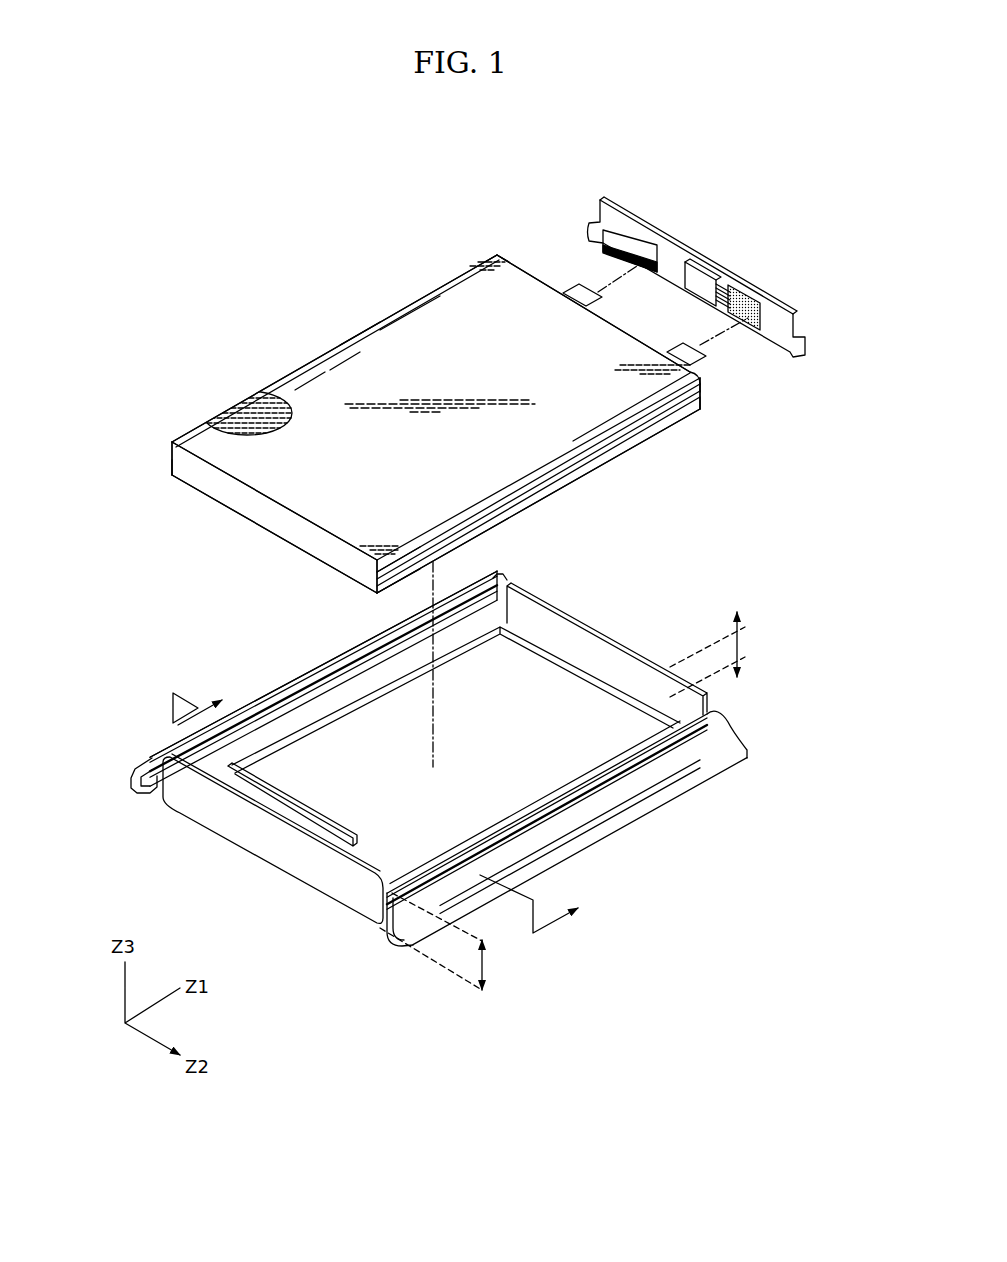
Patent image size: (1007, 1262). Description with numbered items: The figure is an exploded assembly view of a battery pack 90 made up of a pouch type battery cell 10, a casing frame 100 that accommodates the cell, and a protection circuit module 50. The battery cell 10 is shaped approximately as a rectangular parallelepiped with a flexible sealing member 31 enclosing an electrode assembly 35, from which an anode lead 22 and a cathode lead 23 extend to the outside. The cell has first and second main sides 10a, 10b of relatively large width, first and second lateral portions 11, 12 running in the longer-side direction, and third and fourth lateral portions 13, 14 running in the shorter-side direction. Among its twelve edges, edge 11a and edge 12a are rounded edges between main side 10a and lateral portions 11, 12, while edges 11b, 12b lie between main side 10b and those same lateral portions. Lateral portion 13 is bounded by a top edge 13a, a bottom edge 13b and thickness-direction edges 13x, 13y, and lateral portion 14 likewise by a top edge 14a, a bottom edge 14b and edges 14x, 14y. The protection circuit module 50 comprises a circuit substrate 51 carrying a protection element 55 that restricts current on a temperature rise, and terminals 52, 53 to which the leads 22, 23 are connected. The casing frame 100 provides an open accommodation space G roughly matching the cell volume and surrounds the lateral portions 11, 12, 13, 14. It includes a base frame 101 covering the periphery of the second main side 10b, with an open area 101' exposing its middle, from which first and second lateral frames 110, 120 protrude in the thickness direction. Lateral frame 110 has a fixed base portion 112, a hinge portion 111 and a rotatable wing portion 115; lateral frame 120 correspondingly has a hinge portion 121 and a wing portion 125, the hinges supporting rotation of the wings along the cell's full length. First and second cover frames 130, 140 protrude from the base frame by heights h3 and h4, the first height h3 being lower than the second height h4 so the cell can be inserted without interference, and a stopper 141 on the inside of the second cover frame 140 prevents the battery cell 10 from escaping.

The battery pack 90 is at (260, 252).
The battery cell 10 is at (196, 522).
The first main side 10a is at (343, 360).
The second main side 10b is at (360, 332).
The first lateral portion 11 is at (410, 305).
The edge 11a is at (455, 272).
The edge 11b is at (168, 480).
The second lateral portion 12 is at (674, 406).
The edge 12a is at (387, 548).
The edge 12b is at (392, 580).
The third lateral portion 13 is at (714, 380).
The top edge 13a is at (528, 283).
The bottom edge 13b is at (702, 410).
The edge 13x is at (497, 250).
The edge 13y is at (702, 393).
The fourth lateral portion 14 is at (255, 524).
The top edge 14a is at (215, 462).
The bottom edge 14b is at (193, 492).
The edge 14x is at (170, 455).
The edge 14y is at (365, 574).
The anode lead 22 is at (574, 293).
The cathode lead 23 is at (668, 350).
The sealing member 31 is at (310, 385).
The electrode assembly 35 is at (248, 406).
The protection circuit module 50 is at (686, 246).
The circuit substrate 51 is at (778, 300).
The terminal 52 is at (633, 235).
The terminal 53 is at (740, 283).
The protection element 55 is at (694, 262).
The casing frame 100 is at (453, 761).
The base frame 101 is at (593, 643).
The open area 101' is at (551, 641).
The first lateral frame 110 is at (313, 660).
The hinge portion 111 is at (500, 577).
The base portion 112 is at (400, 665).
The wing portion 115 is at (337, 652).
The second lateral frame 120 is at (590, 820).
The hinge portion 121 is at (730, 716).
The wing portion 125 is at (690, 782).
The first cover frame 130 is at (643, 645).
The second cover frame 140 is at (290, 868).
The stopper 141 is at (304, 814).
The accommodation space G is at (387, 727).
The first height h3 is at (719, 654).
The second height h4 is at (441, 941).